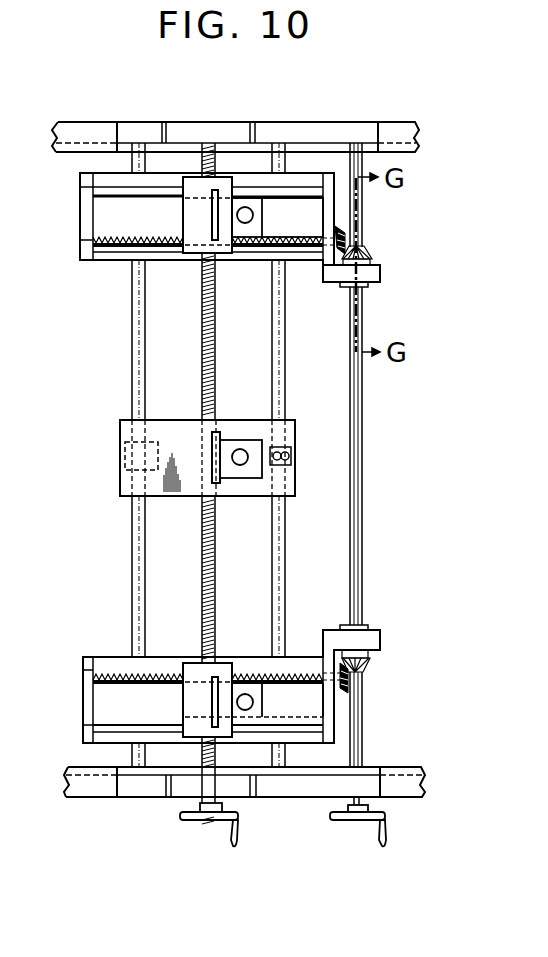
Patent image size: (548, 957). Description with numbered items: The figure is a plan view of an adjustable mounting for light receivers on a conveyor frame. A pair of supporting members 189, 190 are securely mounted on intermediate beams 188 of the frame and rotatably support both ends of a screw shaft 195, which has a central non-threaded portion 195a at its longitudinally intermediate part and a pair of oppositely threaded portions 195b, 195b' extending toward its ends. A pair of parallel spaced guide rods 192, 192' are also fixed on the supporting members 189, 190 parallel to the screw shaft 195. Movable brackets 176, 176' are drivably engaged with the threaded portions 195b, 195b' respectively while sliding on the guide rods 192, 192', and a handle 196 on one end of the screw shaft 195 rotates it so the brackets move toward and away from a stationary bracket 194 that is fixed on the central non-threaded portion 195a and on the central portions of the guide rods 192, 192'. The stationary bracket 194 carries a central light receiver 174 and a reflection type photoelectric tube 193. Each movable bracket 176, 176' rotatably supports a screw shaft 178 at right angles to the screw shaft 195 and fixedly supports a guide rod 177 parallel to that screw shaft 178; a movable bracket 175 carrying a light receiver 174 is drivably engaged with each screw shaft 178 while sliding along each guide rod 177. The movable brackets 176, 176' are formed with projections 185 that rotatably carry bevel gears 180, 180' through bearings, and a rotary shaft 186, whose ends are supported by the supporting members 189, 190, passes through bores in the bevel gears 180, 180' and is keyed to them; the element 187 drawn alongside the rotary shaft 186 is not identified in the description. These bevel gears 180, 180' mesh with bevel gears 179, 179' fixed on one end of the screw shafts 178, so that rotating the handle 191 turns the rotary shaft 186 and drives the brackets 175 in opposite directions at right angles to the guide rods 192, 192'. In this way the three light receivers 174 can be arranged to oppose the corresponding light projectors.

The light receiver 174 is at (247, 215).
The movable bracket 175 is at (184, 215).
The movable bracket 176 is at (204, 227).
The movable bracket 176' is at (230, 673).
The guide rod 177 is at (107, 190).
The screw shaft 178 is at (110, 247).
The bevel gear 179 is at (374, 227).
The bevel gear 179' is at (379, 691).
The bevel gear 180 is at (383, 247).
The bevel gear 180' is at (386, 669).
The projection 185 is at (380, 271).
The rotary shaft 186 is at (362, 496).
The shaft core 187 is at (362, 458).
The intermediate beam 188 is at (397, 130).
The supporting member 189 is at (315, 130).
The supporting member 190 is at (293, 790).
The handle 191 is at (384, 847).
The guide rod 192 is at (114, 455).
The guide rod 192' is at (304, 455).
The reflection type photoelectric tube 193 is at (294, 457).
The stationary bracket 194 is at (120, 434).
The screw shaft 195 is at (183, 483).
The central non-threaded portion 195a is at (202, 443).
The threaded portion 195b is at (182, 280).
The threaded portion 195b' is at (183, 662).
The handle 196 is at (237, 847).